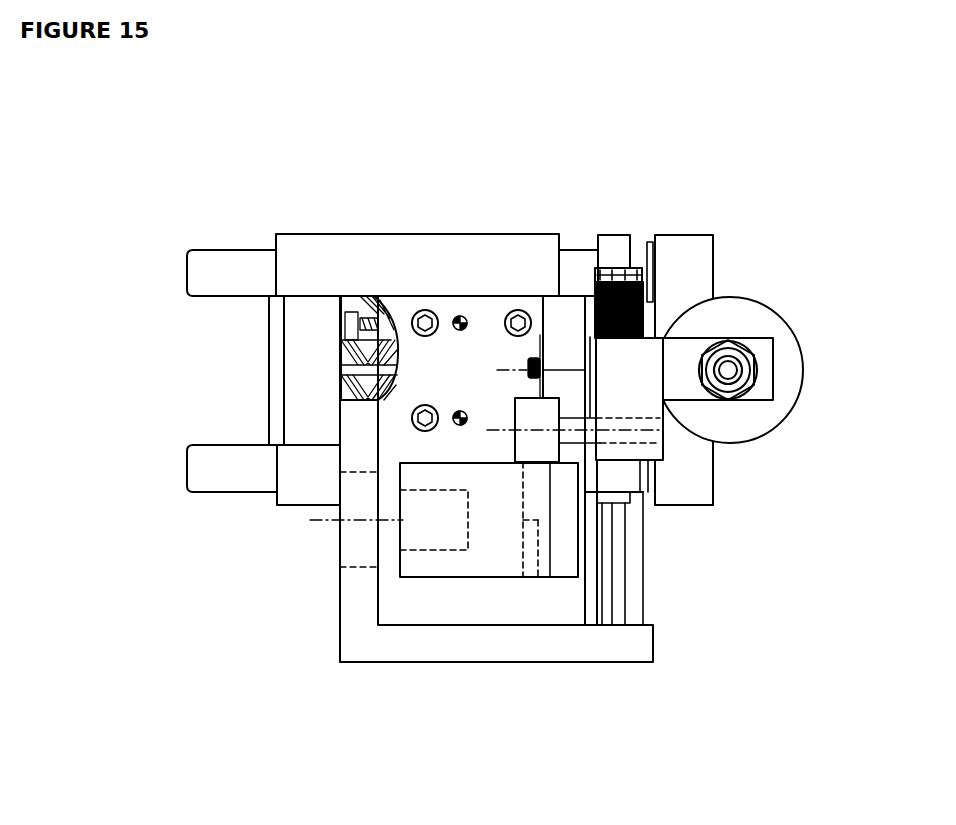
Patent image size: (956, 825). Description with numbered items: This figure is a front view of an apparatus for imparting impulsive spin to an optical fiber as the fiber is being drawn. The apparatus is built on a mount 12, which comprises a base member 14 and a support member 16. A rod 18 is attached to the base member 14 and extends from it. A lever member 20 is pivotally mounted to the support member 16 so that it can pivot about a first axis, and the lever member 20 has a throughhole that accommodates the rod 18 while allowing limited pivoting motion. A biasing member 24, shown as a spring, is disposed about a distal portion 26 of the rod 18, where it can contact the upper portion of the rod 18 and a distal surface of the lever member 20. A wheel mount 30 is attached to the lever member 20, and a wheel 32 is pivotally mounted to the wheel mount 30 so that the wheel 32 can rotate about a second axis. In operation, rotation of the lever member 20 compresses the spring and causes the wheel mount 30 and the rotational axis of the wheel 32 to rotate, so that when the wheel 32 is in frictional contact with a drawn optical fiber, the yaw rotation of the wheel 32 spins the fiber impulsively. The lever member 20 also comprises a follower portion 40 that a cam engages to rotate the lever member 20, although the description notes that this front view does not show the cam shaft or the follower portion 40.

The mount 12 is at (117, 263).
The base member 14 is at (367, 652).
The support member 16 is at (400, 443).
The rod 18 is at (615, 518).
The lever member 20 is at (626, 377).
The biasing member 24 is at (598, 287).
The distal portion 26 is at (625, 263).
The wheel mount 30 is at (762, 353).
The wheel 32 is at (785, 377).
The follower portion 40 is at (527, 445).